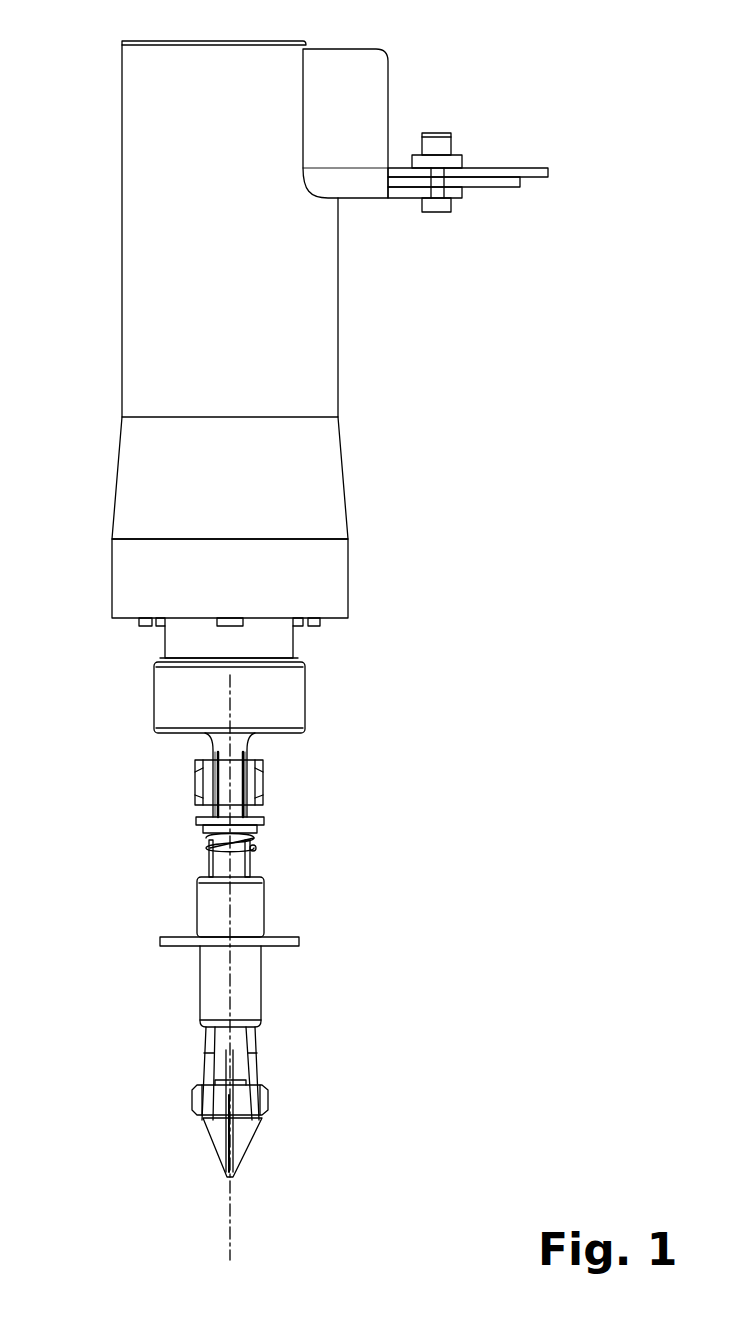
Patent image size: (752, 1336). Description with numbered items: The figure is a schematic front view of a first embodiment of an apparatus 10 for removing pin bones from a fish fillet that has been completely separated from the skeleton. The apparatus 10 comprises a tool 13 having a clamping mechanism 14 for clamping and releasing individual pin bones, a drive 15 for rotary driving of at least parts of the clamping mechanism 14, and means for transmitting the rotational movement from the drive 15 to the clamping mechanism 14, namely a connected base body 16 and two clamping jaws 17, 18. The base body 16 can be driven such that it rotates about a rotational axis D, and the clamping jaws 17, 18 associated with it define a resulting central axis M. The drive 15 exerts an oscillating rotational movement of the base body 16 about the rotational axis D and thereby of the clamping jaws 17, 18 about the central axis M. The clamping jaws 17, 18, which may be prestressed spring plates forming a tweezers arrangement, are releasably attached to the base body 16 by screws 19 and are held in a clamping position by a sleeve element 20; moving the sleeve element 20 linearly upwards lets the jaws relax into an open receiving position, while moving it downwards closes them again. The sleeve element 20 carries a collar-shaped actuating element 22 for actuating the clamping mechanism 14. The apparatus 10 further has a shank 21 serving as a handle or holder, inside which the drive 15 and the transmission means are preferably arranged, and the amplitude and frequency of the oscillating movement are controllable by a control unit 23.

The apparatus 10 is at (577, 87).
The tool 13 is at (152, 980).
The clamping mechanism 14 is at (198, 1146).
The drive 15 is at (299, 630).
The base body 16 is at (222, 752).
The clamping jaw 17 is at (205, 1072).
The clamping jaw 18 is at (255, 1072).
The screw 19 is at (256, 780).
The sleeve element 20 is at (246, 985).
The shank 21 is at (150, 357).
The collar-shaped actuating element 22 is at (160, 940).
The control unit 23 is at (156, 473).
The rotational axis D is at (232, 900).
The central axis M is at (232, 1215).